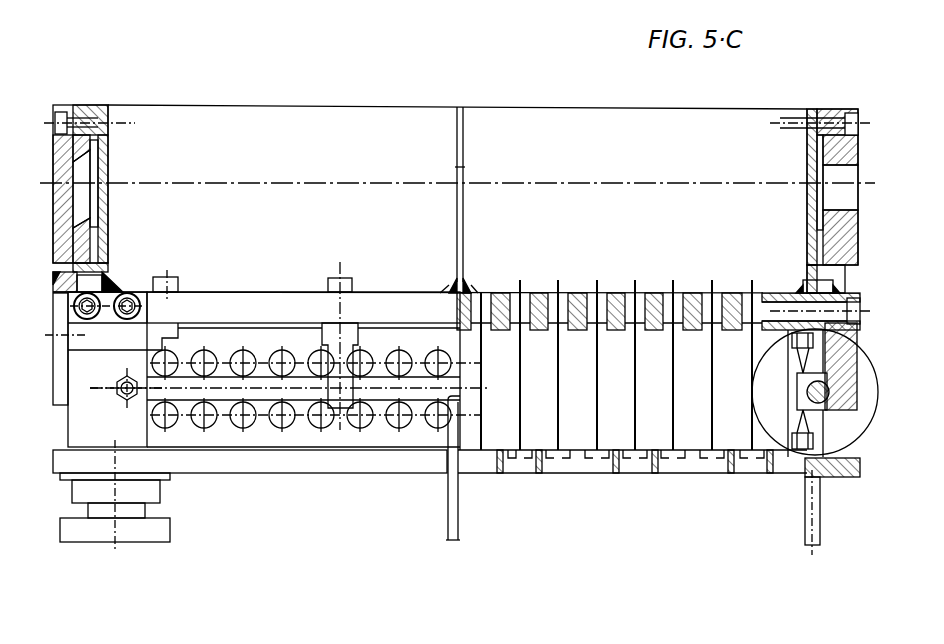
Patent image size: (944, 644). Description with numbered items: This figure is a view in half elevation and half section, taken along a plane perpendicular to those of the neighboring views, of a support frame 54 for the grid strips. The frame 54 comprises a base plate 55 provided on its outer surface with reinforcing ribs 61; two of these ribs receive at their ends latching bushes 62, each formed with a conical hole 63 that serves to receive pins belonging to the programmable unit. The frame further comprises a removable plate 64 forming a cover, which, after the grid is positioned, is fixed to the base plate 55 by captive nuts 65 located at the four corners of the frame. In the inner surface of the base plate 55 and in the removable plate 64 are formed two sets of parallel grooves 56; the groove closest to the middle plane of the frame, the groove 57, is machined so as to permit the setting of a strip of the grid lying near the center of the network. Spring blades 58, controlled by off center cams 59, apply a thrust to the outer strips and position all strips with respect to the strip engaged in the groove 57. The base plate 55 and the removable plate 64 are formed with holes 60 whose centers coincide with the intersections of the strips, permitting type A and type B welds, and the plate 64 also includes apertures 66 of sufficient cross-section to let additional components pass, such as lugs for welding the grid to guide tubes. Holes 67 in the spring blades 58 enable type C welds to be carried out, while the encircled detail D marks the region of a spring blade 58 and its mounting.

The support frame 54 is at (714, 107).
The base plate 55 is at (783, 108).
The parallel grooves 56 is at (527, 295).
The groove closest to the middle plane 57 is at (456, 228).
The spring blades 58 is at (786, 454).
The off center cams 59 is at (265, 395).
The holes 60 is at (710, 300).
The reinforcing ribs 61 is at (463, 167).
The latching bushes 62 is at (855, 148).
The conical hole 63 is at (833, 212).
The removable plate 64 is at (420, 470).
The captive nuts 65 is at (140, 527).
The apertures 66 is at (607, 475).
The holes in the spring blades 67 is at (397, 404).
The detail circle D is at (864, 436).